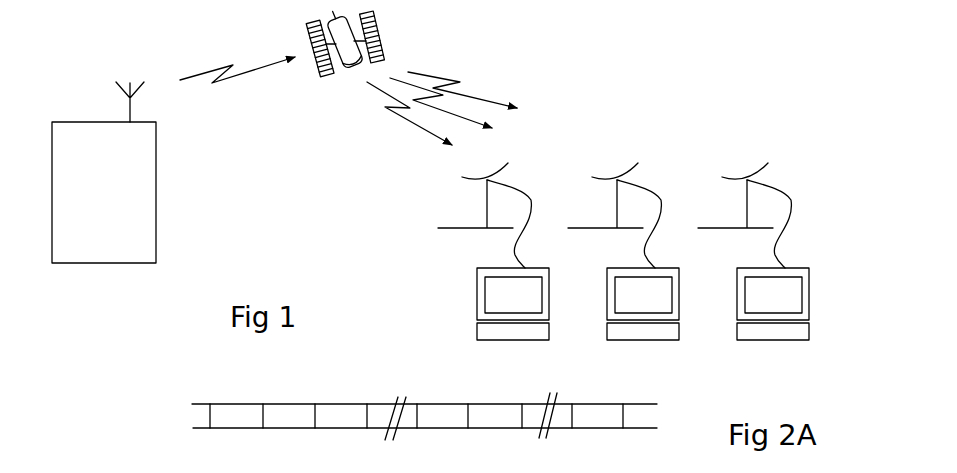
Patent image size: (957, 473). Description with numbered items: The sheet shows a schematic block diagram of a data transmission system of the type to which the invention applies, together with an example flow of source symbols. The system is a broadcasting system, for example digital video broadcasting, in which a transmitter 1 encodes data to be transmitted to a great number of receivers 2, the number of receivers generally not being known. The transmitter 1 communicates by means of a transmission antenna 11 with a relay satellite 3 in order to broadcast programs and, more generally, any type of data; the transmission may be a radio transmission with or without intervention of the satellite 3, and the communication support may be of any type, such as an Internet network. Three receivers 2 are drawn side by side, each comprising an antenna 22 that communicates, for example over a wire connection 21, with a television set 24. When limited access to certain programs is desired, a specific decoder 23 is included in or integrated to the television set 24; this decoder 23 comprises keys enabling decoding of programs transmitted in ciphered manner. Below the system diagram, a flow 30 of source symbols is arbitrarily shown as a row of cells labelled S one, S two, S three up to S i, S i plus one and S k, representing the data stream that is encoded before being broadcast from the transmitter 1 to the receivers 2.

In FIG. 1, the transmitter 1 is at (156, 190).
In FIG. 1, the transmission antenna 11 is at (130, 108).
In FIG. 1, the relay satellite 3 is at (381, 40).
In FIG. 1, the receiver 2 is at (592, 257).
In FIG. 1, the wire connection 21 is at (531, 200).
In FIG. 1, the antenna 22 is at (463, 190).
In FIG. 1, the decoder 23 is at (549, 332).
In FIG. 1, the television set 24 is at (477, 298).
In FIG. 2A, the flow of source symbols 30 is at (193, 428).